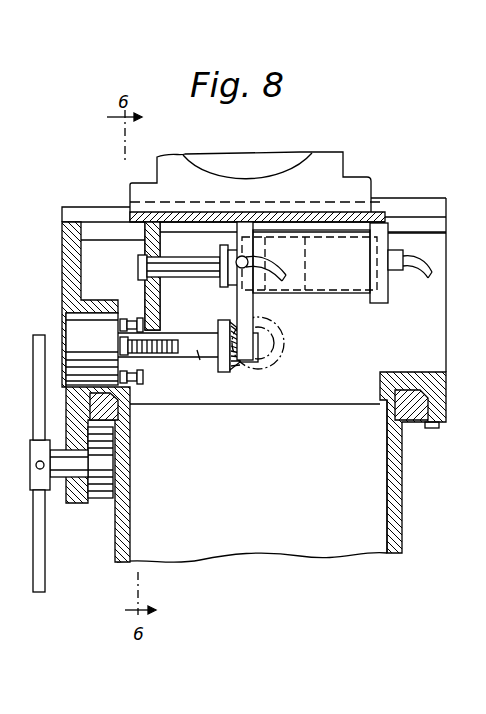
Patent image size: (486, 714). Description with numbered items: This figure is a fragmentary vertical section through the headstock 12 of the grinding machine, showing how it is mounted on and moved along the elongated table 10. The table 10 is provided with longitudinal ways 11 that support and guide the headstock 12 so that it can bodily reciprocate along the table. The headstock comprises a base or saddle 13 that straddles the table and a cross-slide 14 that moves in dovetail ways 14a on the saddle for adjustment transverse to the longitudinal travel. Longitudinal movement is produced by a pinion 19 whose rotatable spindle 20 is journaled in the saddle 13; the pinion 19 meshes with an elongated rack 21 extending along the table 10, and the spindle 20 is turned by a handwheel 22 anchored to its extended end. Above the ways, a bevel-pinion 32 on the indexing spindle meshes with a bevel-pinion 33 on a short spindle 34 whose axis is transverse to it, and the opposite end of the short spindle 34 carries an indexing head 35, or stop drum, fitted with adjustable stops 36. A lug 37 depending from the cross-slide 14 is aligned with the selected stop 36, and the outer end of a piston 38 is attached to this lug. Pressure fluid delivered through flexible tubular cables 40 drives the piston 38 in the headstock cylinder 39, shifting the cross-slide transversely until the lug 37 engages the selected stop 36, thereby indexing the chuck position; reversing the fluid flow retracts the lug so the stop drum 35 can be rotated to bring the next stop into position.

The table 10 is at (396, 468).
The longitudinal ways 11 is at (415, 398).
The headstock 12 is at (386, 191).
The base or saddle 13 is at (70, 260).
The cross-slide 14 is at (137, 195).
The dovetail ways 14a is at (78, 212).
The pinion 19 is at (103, 499).
The spindle 20 is at (58, 490).
The rack 21 is at (114, 432).
The handwheel 22 is at (38, 382).
The bevel-pinion 32 is at (268, 360).
The bevel-pinion 33 is at (232, 366).
The short spindle 34 is at (169, 358).
The indexing head 35 is at (78, 333).
The adjustable stops 36 is at (134, 318).
The lug 37 is at (156, 297).
The piston 38 is at (305, 252).
The headstock cylinder 39 is at (328, 294).
The flexible tubular cables 40 is at (420, 270).